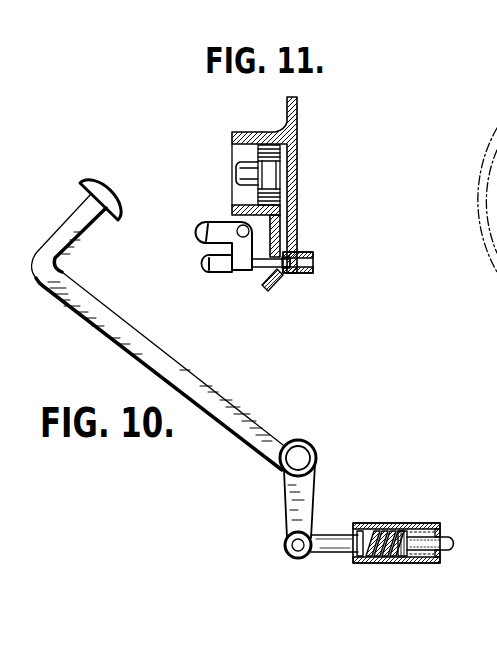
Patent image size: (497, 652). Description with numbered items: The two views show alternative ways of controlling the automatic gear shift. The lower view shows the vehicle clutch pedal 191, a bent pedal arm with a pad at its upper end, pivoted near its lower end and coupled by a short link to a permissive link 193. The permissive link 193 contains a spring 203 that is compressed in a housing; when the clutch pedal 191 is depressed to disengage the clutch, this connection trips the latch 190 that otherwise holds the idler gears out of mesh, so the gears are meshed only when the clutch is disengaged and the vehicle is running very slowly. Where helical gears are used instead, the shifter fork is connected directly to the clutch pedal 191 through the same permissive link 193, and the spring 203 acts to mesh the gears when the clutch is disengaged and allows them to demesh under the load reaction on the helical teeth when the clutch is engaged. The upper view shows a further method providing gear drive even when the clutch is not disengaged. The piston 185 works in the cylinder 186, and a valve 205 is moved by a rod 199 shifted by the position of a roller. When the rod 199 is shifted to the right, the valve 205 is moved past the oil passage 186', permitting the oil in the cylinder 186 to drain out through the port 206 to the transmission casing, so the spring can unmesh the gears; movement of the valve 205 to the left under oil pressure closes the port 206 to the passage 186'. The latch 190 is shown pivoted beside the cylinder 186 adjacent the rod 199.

In FIG. 11, the piston 185 is at (273, 177).
In FIG. 11, the cylinder 186 is at (244, 185).
In FIG. 11, the oil passage 186' is at (312, 236).
In FIG. 11, the latch 190 is at (222, 223).
In FIG. 11, the rod 199 is at (218, 269).
In FIG. 11, the valve 205 is at (289, 273).
In FIG. 11, the port 206 is at (264, 273).
In FIG. 10, the clutch pedal 191 is at (194, 378).
In FIG. 10, the permissive link 193 is at (378, 524).
In FIG. 10, the spring 203 is at (383, 564).